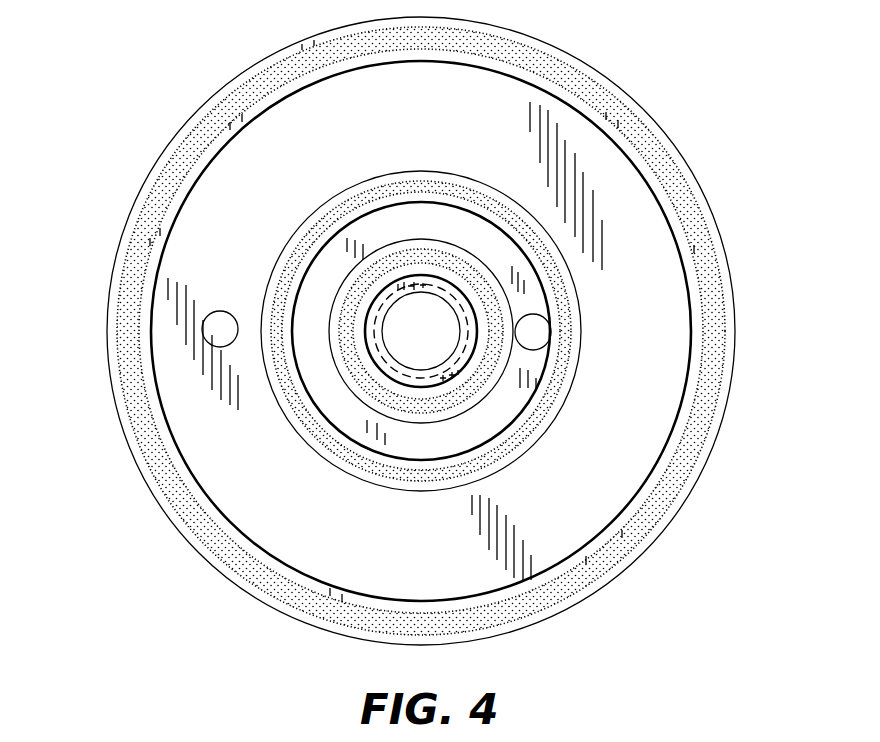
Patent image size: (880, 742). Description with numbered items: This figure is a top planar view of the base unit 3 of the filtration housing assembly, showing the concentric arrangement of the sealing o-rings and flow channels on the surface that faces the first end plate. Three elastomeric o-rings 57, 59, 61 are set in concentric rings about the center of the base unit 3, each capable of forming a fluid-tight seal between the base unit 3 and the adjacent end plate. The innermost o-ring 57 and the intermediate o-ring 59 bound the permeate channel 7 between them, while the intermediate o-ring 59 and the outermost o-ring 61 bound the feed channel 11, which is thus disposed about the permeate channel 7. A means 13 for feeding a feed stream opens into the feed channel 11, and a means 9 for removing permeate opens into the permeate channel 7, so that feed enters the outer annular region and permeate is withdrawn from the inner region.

The base unit 3 is at (233, 585).
The o-ring 61 is at (138, 393).
The o-ring 59 is at (428, 188).
The o-ring 57 is at (438, 257).
The permeate channel 7 is at (428, 447).
The feed channel 11 is at (284, 493).
The means for feeding a feed stream 13 is at (220, 329).
The means for removing permeate 9 is at (538, 332).